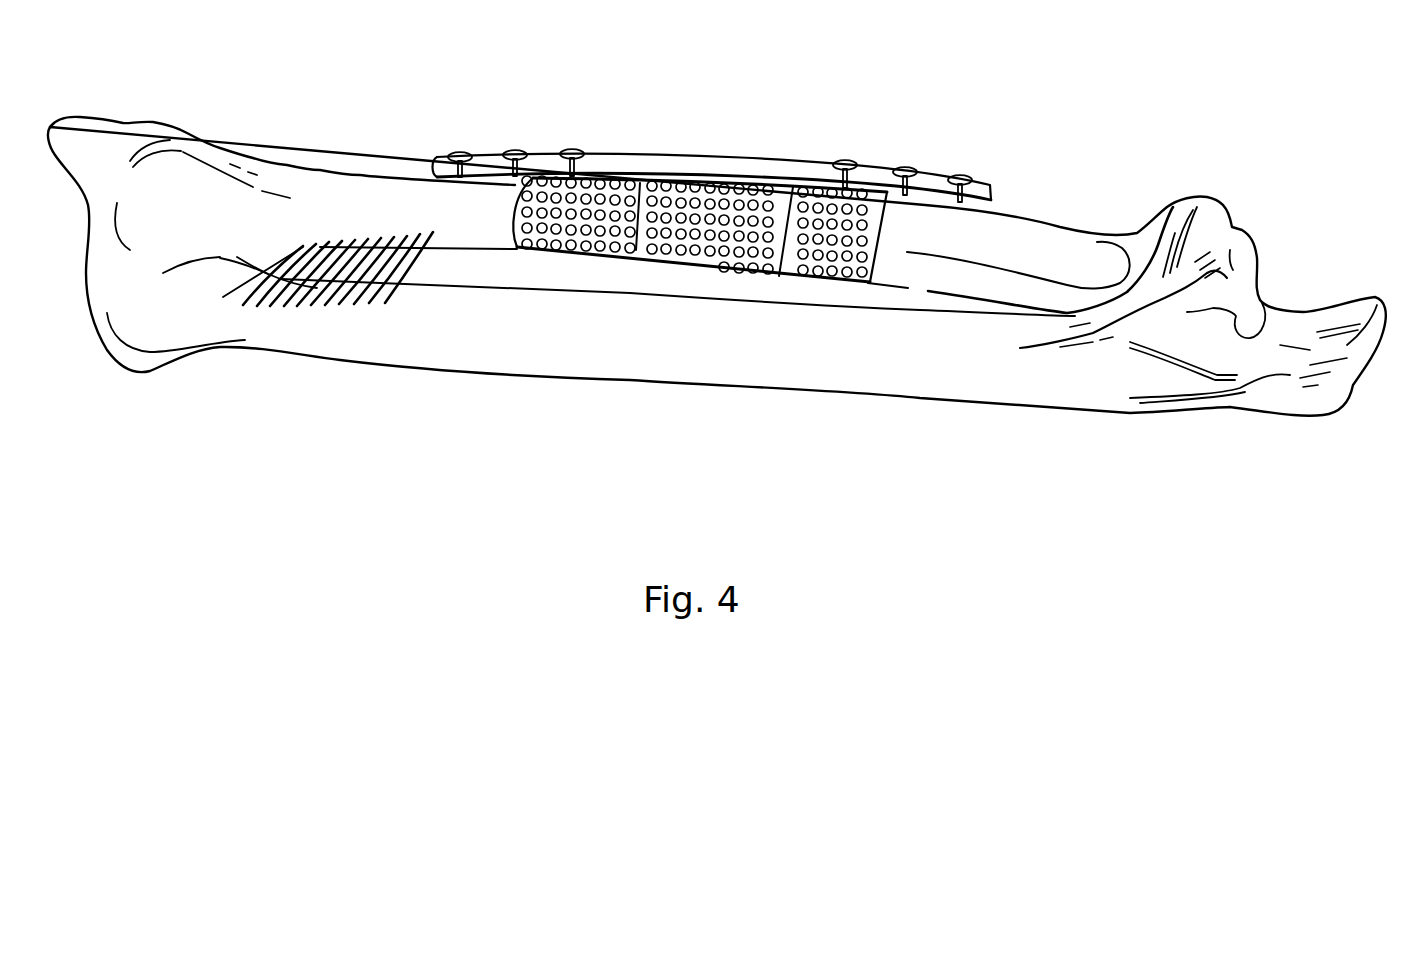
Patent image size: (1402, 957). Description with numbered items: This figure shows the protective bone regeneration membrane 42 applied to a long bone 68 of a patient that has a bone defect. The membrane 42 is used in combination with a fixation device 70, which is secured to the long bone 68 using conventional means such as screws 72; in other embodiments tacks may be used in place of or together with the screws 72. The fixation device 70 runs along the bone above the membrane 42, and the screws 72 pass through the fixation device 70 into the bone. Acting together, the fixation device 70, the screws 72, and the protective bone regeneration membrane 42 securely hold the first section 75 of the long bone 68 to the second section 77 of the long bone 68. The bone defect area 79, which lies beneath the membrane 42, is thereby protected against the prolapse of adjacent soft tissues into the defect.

The protective bone regeneration membrane 42 is at (510, 227).
The long bone 68 is at (1066, 227).
The fixation device 70 is at (993, 186).
The screws 72 is at (566, 148).
The first section 75 is at (948, 283).
The second section 77 is at (473, 240).
The bone defect area 79 is at (712, 208).